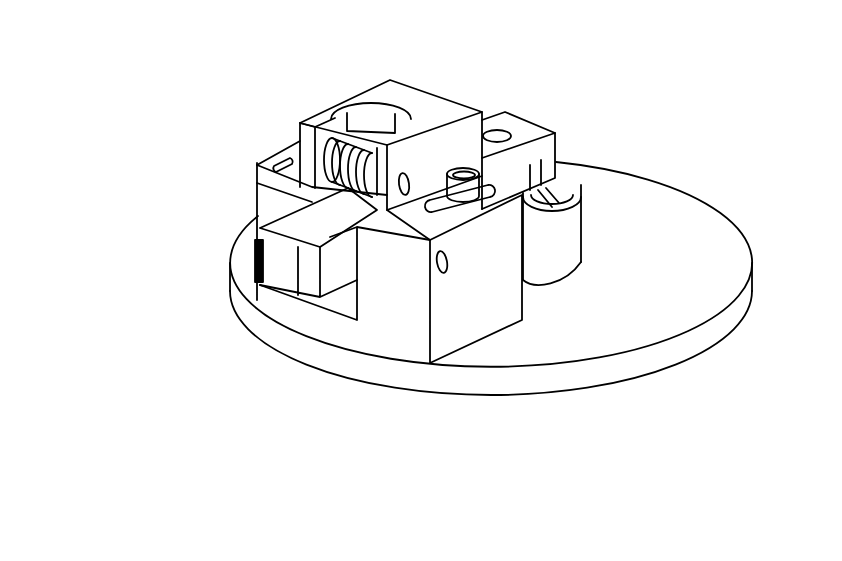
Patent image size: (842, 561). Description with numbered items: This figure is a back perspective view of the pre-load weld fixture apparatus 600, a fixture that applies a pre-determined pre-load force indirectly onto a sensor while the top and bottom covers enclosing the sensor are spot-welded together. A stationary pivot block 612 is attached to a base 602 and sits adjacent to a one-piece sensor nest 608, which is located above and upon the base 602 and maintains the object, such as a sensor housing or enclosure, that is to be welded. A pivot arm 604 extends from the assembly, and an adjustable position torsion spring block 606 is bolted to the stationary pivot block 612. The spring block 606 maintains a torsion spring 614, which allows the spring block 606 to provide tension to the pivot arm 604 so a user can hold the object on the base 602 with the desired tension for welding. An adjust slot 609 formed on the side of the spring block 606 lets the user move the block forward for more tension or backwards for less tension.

The pre-load weld fixture apparatus 600 is at (136, 55).
The base 602 is at (700, 222).
The pivot arm 604 is at (292, 232).
The adjustable position torsion spring block 606 is at (388, 100).
The one-piece sensor nest 608 is at (566, 247).
The adjust slot 609 is at (408, 178).
The stationary pivot block 612 is at (462, 317).
The torsion spring 614 is at (300, 147).